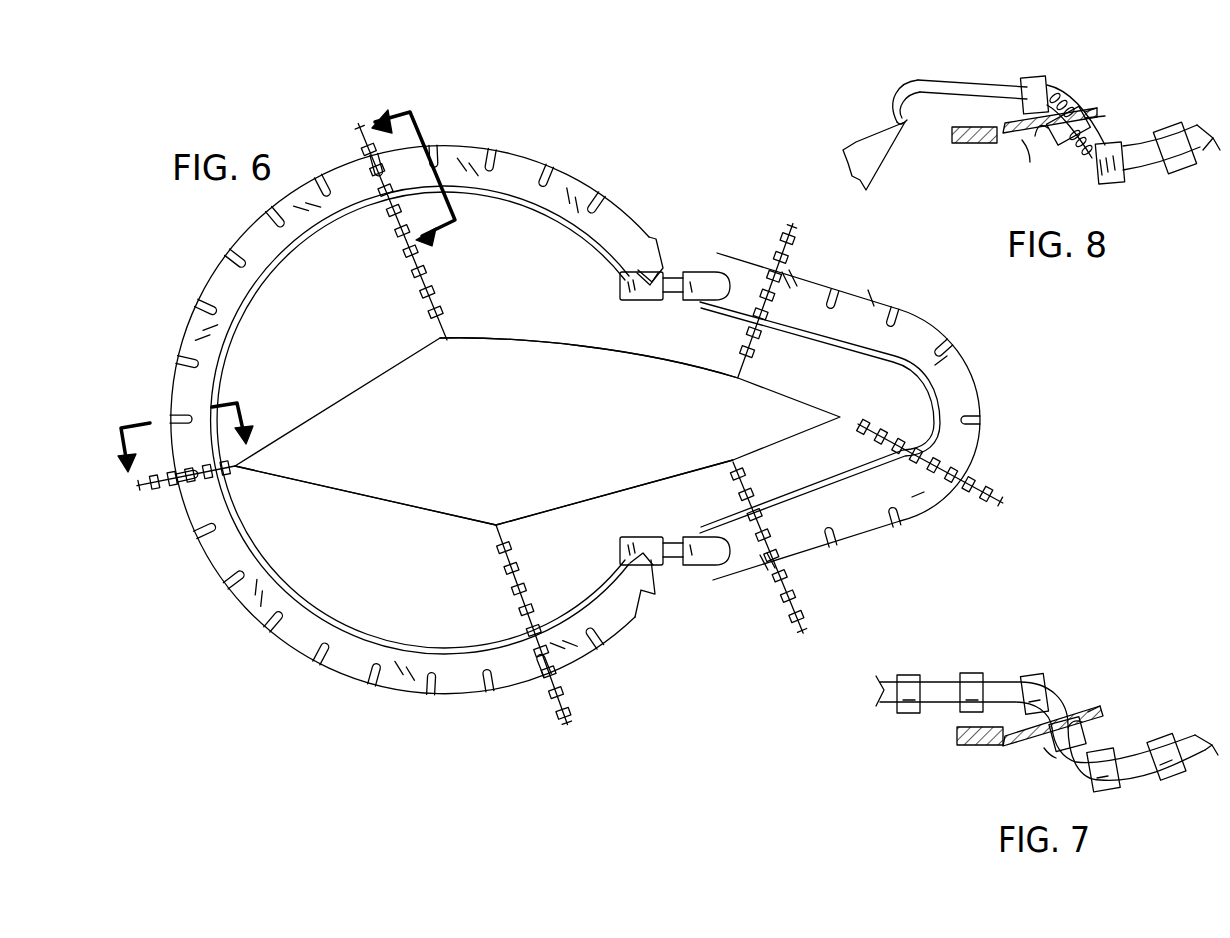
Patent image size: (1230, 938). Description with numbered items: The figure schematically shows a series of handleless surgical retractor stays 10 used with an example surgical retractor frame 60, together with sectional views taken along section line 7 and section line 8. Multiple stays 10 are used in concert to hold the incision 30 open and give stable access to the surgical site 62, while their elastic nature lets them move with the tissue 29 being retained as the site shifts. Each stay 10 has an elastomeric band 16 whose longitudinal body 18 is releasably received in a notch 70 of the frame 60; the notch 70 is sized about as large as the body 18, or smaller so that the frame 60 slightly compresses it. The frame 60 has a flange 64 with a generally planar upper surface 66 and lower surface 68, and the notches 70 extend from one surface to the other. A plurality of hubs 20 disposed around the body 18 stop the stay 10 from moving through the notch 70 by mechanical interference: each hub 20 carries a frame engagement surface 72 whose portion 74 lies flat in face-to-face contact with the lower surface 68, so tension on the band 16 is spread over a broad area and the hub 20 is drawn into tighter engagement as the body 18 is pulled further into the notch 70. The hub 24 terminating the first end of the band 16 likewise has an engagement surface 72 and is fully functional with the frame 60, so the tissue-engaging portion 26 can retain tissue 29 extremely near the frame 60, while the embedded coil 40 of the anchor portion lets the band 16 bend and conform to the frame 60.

In FIG. 6, the stay 10 is at (396, 272).
In FIG. 6, the tissue 29 is at (514, 335).
In FIG. 8, the tissue 29 is at (866, 135).
In FIG. 6, the incision 30 is at (547, 437).
In FIG. 6, the surgical site 62 is at (368, 487).
In FIG. 6, the surgical retractor frame 60 is at (558, 182).
In FIG. 8, the surgical retractor frame 60 is at (950, 140).
In FIG. 7, the surgical retractor frame 60 is at (955, 741).
In FIG. 6, the flange 64 is at (516, 165).
In FIG. 8, the flange 64 is at (1006, 138).
In FIG. 7, the flange 64 is at (1010, 748).
In FIG. 6, the notch 70 is at (602, 204).
In FIG. 6, the section line 7- 7 is at (413, 176).
In FIG. 6, the section line 8- 8 is at (184, 444).
In FIG. 8, the tissue-engaging portion 26 is at (932, 80).
In FIG. 8, the hub 24 is at (1037, 76).
In FIG. 8, the longitudinal body 18 is at (1056, 88).
In FIG. 7, the longitudinal body 18 is at (1000, 680).
In FIG. 8, the hub 20 is at (1092, 134).
In FIG. 7, the hub 20 is at (1035, 678).
In FIG. 8, the coil 40 is at (1110, 180).
In FIG. 8, the upper surface 66 is at (1086, 110).
In FIG. 7, the upper surface 66 is at (1088, 712).
In FIG. 8, the portion of the engagement surface 74 is at (1096, 118).
In FIG. 8, the frame engagement surface 72 is at (1043, 138).
In FIG. 7, the frame engagement surface 72 is at (1086, 722).
In FIG. 8, the lower surface 68 is at (1028, 152).
In FIG. 7, the lower surface 68 is at (1046, 756).
In FIG. 7, the elastomeric band 16 is at (940, 680).